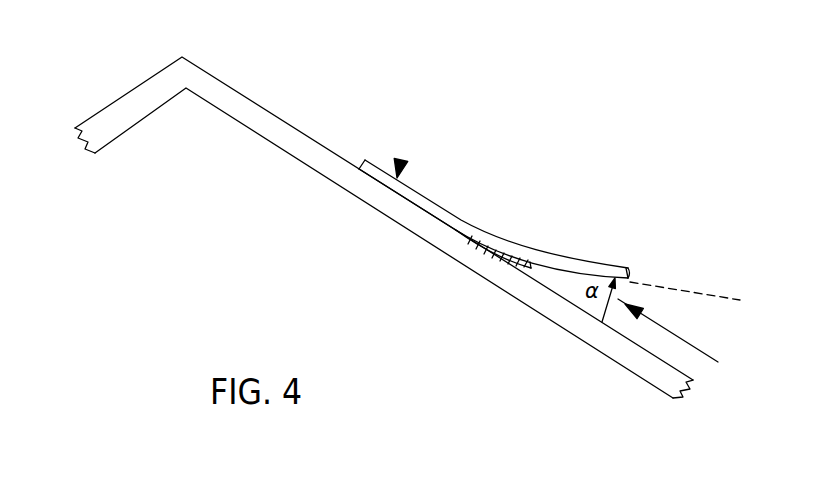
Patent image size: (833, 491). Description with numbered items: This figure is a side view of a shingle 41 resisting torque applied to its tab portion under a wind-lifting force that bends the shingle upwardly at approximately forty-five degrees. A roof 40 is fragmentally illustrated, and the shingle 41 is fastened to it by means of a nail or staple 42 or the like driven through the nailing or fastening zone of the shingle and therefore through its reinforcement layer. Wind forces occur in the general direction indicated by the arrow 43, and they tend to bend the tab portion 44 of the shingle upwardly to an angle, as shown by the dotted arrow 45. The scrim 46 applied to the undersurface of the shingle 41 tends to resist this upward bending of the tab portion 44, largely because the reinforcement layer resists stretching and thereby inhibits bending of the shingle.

The roof 40 is at (219, 93).
The shingle 41 is at (401, 162).
The nail or staple 42 is at (460, 205).
The arrow 43 is at (692, 345).
The tab portion 44 is at (602, 269).
The dotted arrow 45 is at (608, 308).
The scrim 46 is at (527, 260).